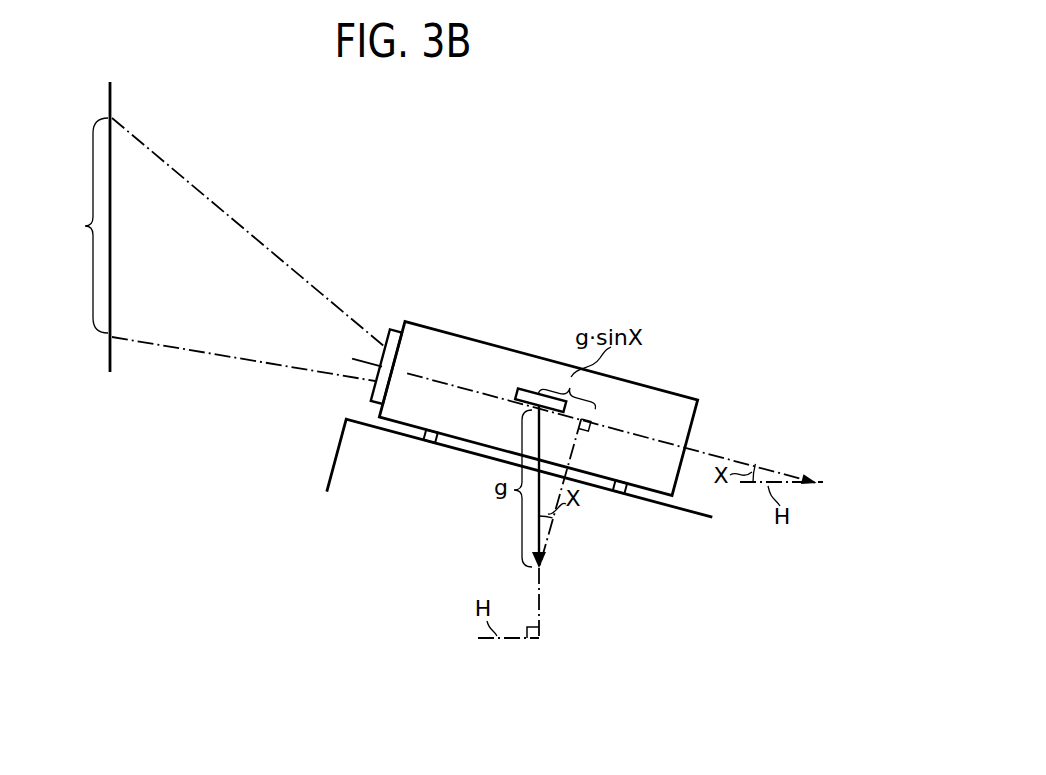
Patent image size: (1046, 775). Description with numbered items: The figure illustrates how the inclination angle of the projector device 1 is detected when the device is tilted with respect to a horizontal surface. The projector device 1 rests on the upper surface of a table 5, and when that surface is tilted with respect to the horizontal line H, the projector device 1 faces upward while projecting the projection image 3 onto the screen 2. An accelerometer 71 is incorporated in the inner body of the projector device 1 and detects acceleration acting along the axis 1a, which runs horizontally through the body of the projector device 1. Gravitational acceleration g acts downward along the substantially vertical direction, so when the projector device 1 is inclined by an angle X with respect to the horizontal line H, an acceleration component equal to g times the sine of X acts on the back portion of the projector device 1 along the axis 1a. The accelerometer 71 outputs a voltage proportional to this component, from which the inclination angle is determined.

The projector device 1 is at (421, 248).
The axis 1a is at (733, 458).
The screen 2 is at (111, 97).
The projection image 3 is at (86, 225).
The table 5 is at (334, 459).
The accelerometer 71 is at (517, 391).